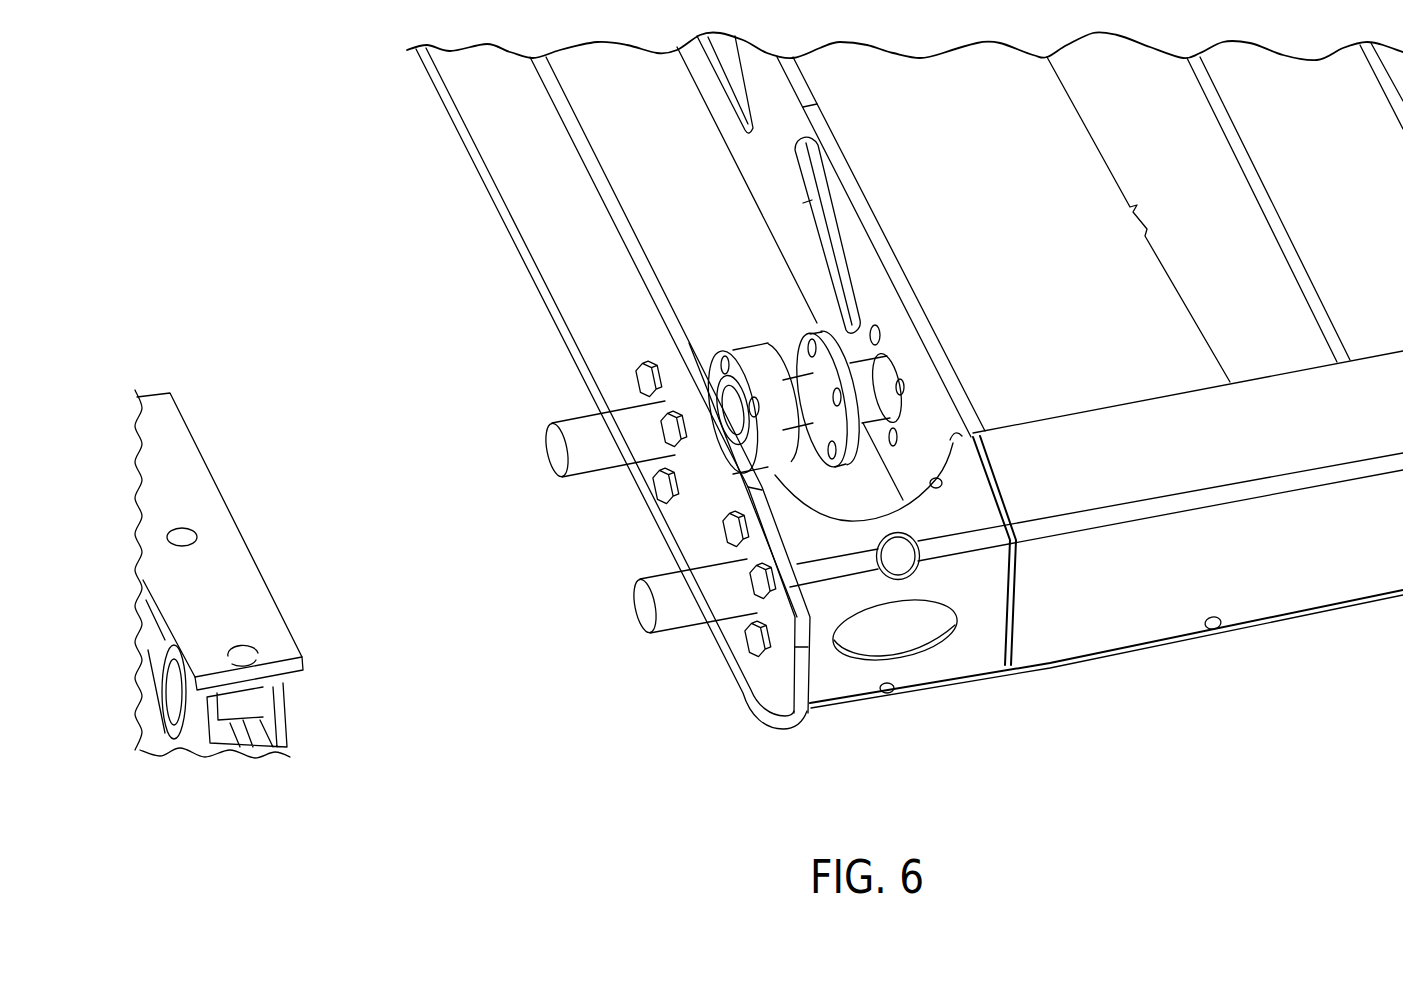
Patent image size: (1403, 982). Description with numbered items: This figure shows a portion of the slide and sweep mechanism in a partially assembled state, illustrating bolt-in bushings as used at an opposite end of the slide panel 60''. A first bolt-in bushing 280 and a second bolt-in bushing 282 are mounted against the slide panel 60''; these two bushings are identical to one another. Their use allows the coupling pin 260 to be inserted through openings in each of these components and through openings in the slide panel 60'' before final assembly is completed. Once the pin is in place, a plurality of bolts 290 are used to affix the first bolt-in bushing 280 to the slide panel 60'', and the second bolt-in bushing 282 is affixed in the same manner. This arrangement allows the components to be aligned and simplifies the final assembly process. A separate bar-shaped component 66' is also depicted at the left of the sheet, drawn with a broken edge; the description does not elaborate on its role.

The slide panel 60'' is at (1089, 529).
The mounting bar 66' is at (219, 574).
The coupling pin 260 is at (555, 452).
The first bolt-in bushing 280 is at (740, 347).
The second bolt-in bushing 282 is at (813, 333).
The bolts 290 is at (660, 430).